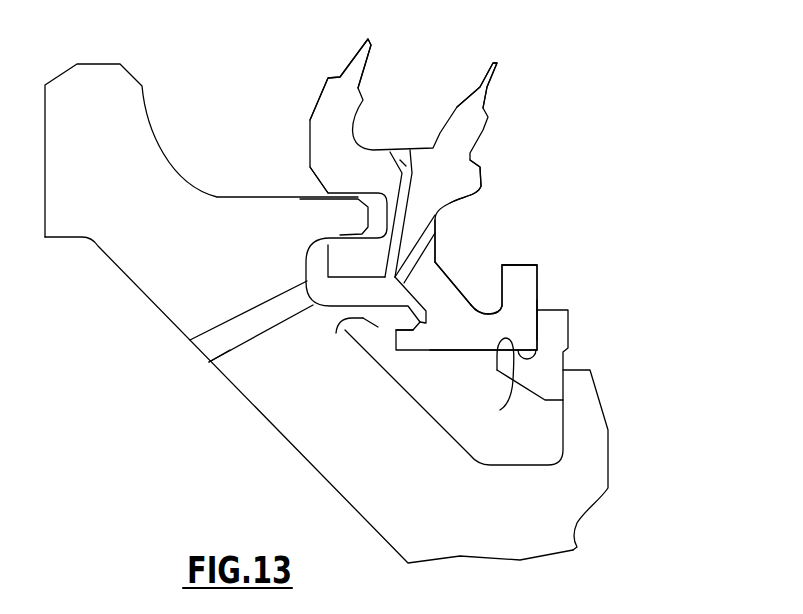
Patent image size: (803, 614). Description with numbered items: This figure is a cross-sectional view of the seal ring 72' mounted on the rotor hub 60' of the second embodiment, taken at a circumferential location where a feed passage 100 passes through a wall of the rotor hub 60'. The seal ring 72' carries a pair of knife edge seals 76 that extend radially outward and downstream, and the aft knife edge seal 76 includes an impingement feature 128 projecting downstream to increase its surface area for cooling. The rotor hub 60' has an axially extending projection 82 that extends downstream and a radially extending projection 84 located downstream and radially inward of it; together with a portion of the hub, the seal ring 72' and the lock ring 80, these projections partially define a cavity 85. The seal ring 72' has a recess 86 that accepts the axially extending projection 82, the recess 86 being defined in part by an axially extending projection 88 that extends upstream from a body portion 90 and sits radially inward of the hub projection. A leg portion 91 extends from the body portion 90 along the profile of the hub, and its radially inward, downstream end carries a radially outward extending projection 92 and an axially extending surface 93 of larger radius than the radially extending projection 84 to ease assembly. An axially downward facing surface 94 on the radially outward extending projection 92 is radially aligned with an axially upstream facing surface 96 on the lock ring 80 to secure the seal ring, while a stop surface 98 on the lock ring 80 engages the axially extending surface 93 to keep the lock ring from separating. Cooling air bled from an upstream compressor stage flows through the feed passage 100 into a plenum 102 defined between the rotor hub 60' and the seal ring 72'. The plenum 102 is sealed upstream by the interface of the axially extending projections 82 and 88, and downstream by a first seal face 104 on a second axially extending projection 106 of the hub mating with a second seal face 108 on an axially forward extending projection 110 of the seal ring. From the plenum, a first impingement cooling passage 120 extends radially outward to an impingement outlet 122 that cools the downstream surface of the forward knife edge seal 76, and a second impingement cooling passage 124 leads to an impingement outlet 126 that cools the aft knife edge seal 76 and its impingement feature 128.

The rotor hub 60' is at (309, 313).
The seal ring 72' is at (450, 194).
The knife edge seals 76 is at (358, 44).
The lock ring 80 is at (565, 328).
The axially extending projection 82 is at (342, 220).
The radially extending projection 84 is at (592, 423).
The cavity 85 is at (426, 374).
The recess 86 is at (303, 180).
The axially extending projection 88 is at (348, 264).
The body portion 90 is at (418, 226).
The leg portion 91 is at (452, 284).
The radially outward extending projection 92 is at (529, 266).
The axially extending surface 93 is at (480, 350).
The axially downward facing surface 94 is at (528, 274).
The axially upstream facing surface 96 is at (538, 316).
The stop surface 98 is at (490, 384).
The feed passage 100 is at (207, 370).
The plenum 102 is at (324, 312).
The first seal face 104 is at (378, 328).
The second axially extending projection 106 is at (336, 333).
The second seal face 108 is at (436, 263).
The axially forward extending projection 110 is at (413, 340).
The first impingement cooling passage 120 is at (414, 150).
The impingement outlet 122 is at (392, 146).
The second impingement cooling passage 124 is at (434, 247).
The impingement outlet 126 is at (445, 204).
The impingement feature 128 is at (478, 175).